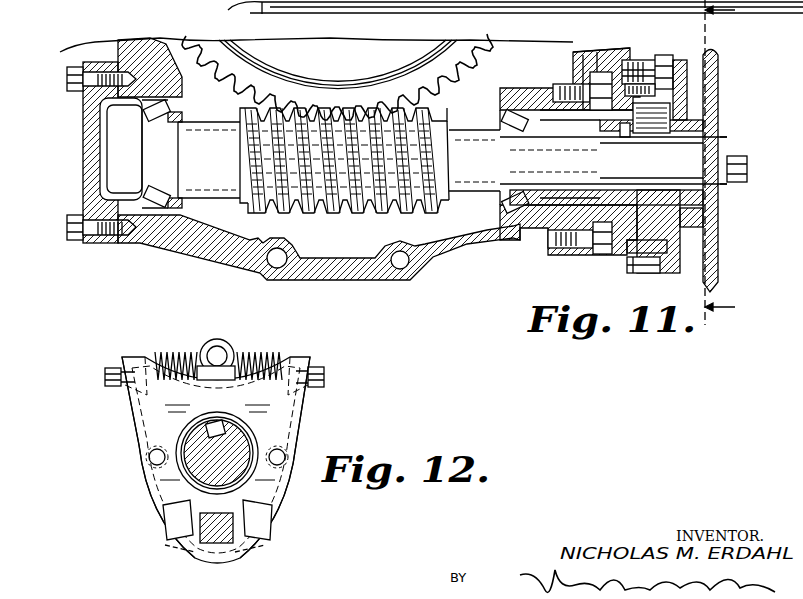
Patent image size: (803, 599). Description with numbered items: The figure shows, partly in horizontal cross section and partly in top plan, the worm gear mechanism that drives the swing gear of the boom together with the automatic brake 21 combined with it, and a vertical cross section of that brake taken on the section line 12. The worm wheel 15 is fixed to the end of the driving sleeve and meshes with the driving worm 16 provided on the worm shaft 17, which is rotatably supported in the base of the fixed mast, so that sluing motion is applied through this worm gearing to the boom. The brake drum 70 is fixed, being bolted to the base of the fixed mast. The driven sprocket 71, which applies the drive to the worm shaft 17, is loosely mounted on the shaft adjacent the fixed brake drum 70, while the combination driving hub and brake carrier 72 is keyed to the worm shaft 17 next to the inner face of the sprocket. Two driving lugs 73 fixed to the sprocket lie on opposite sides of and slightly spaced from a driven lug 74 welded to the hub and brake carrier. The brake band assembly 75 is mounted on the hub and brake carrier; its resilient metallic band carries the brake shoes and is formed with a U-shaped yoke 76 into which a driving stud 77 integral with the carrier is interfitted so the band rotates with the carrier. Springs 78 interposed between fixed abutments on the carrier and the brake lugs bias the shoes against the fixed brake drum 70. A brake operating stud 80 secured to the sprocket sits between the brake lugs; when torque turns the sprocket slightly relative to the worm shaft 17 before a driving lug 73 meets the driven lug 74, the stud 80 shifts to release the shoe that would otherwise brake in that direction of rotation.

In FIG. 11, the section line 12 is at (733, 162).
In FIG. 11, the worm wheel 15 is at (398, 62).
In FIG. 11, the driving worm 16 is at (330, 212).
In FIG. 11, the worm shaft 17 is at (467, 185).
In FIG. 11, the automatic brake 21 is at (650, 88).
In FIG. 11, the brake drum 70 is at (612, 250).
In FIG. 11, the driven sprocket 71 is at (720, 106).
In FIG. 11, the combination driving hub and brake carrier 72 is at (718, 233).
In FIG. 12, the combination driving hub and brake carrier 72 is at (152, 437).
In FIG. 12, the driving lugs 73 is at (265, 527).
In FIG. 12, the driven lug 74 is at (215, 544).
In FIG. 11, the brake band assembly 75 is at (632, 85).
In FIG. 12, the brake band assembly 75 is at (294, 472).
In FIG. 11, the U-shaped yoke 76 is at (628, 253).
In FIG. 12, the U-shaped yoke 76 is at (186, 556).
In FIG. 11, the driving stud 77 is at (645, 272).
In FIG. 12, the driving stud 77 is at (236, 552).
In FIG. 12, the springs 78 is at (258, 362).
In FIG. 11, the brake operating stud 80 is at (666, 64).